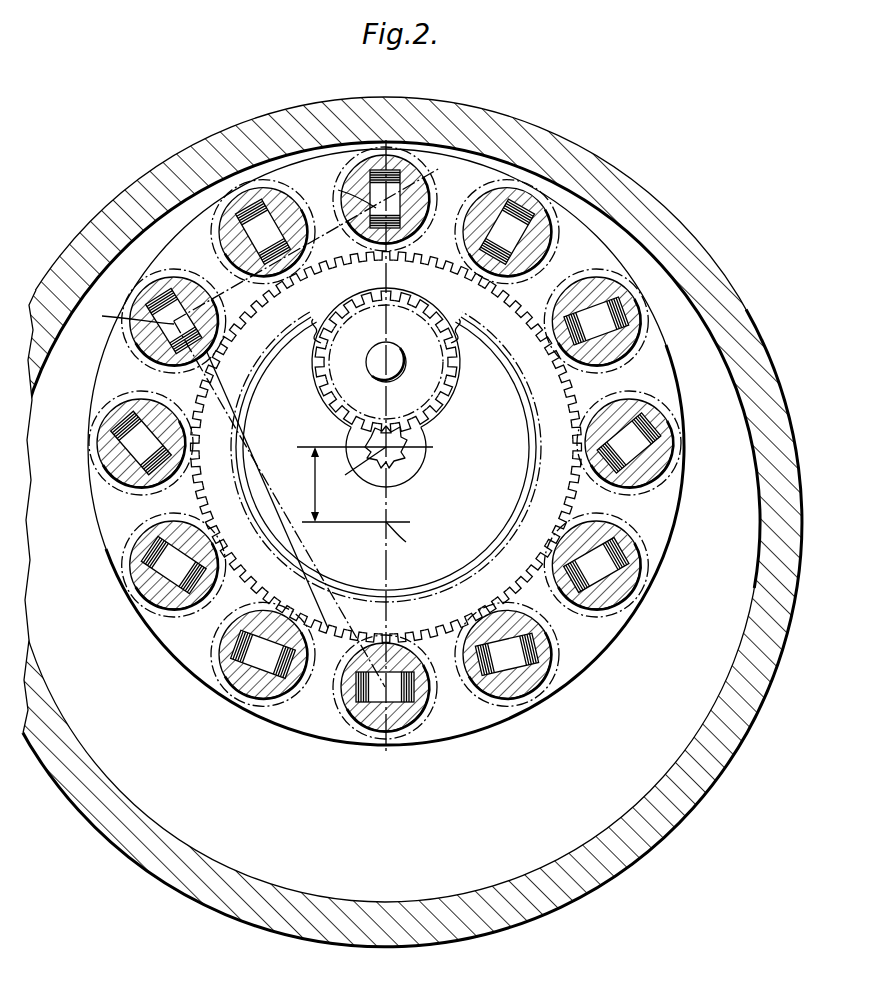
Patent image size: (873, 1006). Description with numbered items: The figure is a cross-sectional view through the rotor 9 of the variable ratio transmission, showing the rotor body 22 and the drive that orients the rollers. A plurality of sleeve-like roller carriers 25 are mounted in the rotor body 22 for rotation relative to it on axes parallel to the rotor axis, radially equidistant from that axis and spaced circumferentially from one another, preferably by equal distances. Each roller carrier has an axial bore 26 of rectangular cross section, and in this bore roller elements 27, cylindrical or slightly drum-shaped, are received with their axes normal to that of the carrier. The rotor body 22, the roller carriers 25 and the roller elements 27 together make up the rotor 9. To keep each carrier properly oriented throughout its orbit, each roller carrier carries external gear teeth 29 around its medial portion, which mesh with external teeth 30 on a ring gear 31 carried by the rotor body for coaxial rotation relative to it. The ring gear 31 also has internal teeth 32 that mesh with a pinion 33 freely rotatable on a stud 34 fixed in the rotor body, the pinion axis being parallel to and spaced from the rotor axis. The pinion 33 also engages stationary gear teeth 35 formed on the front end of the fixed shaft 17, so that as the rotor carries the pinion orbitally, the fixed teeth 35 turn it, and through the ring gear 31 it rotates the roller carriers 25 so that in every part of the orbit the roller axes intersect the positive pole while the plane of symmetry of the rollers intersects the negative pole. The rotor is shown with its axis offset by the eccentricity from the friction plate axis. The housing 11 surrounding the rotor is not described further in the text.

The rotor 9 is at (178, 677).
The housing 11 is at (150, 178).
The fixed shaft 17 is at (412, 463).
The rotor body 22 is at (421, 513).
The roller carrier 25 is at (296, 192).
The bore 26 is at (256, 245).
The roller element 27 is at (392, 172).
The external gear teeth 29 is at (215, 366).
The external teeth 30 is at (246, 588).
The ring gear 31 is at (380, 282).
The internal teeth 32 is at (460, 332).
The pinion 33 is at (378, 336).
The stud 34 is at (397, 358).
The stationary gear teeth 35 is at (408, 440).